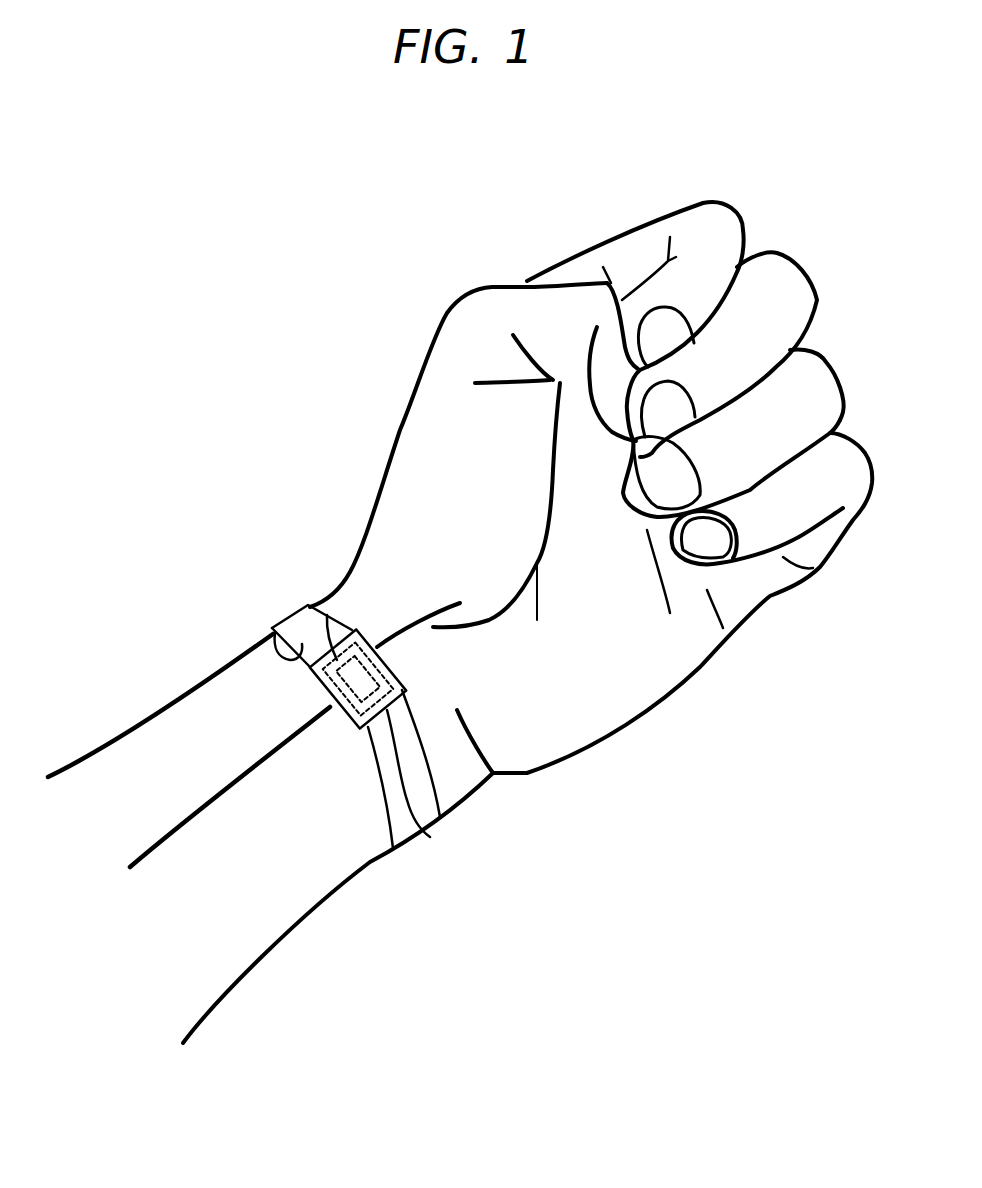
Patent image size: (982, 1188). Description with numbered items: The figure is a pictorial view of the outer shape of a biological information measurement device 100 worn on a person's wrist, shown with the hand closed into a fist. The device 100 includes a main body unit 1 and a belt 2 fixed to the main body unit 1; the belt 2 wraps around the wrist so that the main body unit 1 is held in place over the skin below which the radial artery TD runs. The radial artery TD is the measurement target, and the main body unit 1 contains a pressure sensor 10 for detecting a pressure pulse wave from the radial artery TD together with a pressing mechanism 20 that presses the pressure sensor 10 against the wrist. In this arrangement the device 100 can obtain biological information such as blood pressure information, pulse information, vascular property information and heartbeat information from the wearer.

The biological information measurement device 100 is at (415, 655).
The pressing mechanism 20 is at (298, 630).
The belt 2 is at (277, 660).
The pressure sensor 10 is at (365, 685).
The main body unit 1 is at (430, 837).
The radial artery TD is at (250, 768).